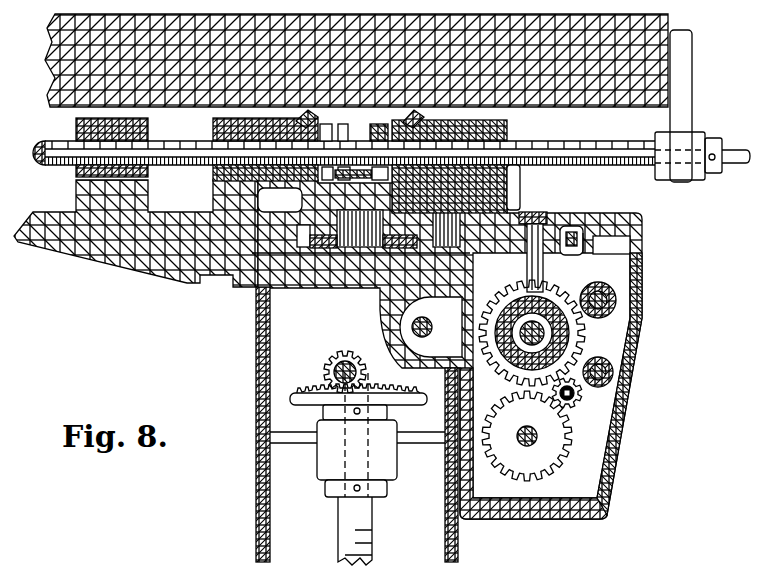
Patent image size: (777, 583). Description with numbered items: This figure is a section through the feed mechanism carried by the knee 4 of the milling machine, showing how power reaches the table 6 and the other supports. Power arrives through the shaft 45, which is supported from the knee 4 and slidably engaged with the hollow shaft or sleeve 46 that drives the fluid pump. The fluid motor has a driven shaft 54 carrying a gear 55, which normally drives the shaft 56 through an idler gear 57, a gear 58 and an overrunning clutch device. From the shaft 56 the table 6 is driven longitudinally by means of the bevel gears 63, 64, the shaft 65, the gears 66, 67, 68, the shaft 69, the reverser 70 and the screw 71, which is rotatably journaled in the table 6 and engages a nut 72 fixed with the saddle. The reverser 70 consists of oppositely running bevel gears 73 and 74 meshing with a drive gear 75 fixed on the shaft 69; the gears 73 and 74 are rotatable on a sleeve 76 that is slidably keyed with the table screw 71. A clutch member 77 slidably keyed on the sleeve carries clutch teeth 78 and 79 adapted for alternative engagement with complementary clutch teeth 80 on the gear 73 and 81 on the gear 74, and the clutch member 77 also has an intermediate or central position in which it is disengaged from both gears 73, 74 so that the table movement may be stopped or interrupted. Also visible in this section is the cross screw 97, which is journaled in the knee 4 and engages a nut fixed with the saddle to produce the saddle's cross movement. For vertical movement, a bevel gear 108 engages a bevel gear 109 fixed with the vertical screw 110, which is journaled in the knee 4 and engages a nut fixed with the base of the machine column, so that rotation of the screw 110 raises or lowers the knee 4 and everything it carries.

The knee 4 is at (262, 405).
The table 6 is at (668, 24).
The shaft 45 is at (605, 378).
The hollow shaft or sleeve 46 is at (612, 362).
The driven shaft 54 is at (527, 427).
The gear 55 is at (548, 458).
The shaft 56 is at (500, 372).
The idler gear 57 is at (582, 408).
The gear 58 is at (585, 340).
The bevel gear 63 is at (553, 325).
The bevel gear 64 is at (556, 292).
The shaft 65 is at (585, 260).
The gear 66 is at (551, 232).
The gear 67 is at (482, 222).
The gear 68 is at (352, 232).
The shaft 69 is at (360, 244).
The reverser 70 is at (257, 291).
The screw 71 is at (194, 166).
The nut 72 is at (75, 136).
The bevel gear 73 is at (292, 118).
The bevel gear 74 is at (440, 118).
The drive gear 75 is at (292, 212).
The sleeve 76 is at (503, 180).
The clutch member 77 is at (348, 124).
The clutch teeth 78 is at (336, 124).
The clutch teeth 79 is at (384, 124).
The clutch teeth 80 is at (313, 116).
The clutch teeth 81 is at (408, 120).
The cross screw 97 is at (443, 320).
The bevel gear 108 is at (326, 352).
The bevel gear 109 is at (303, 384).
The vertical screw 110 is at (350, 516).